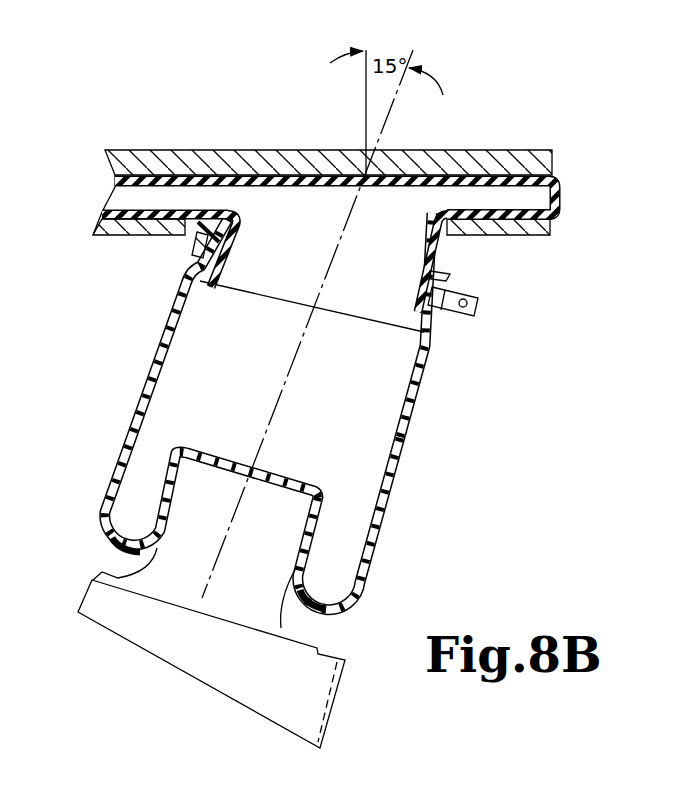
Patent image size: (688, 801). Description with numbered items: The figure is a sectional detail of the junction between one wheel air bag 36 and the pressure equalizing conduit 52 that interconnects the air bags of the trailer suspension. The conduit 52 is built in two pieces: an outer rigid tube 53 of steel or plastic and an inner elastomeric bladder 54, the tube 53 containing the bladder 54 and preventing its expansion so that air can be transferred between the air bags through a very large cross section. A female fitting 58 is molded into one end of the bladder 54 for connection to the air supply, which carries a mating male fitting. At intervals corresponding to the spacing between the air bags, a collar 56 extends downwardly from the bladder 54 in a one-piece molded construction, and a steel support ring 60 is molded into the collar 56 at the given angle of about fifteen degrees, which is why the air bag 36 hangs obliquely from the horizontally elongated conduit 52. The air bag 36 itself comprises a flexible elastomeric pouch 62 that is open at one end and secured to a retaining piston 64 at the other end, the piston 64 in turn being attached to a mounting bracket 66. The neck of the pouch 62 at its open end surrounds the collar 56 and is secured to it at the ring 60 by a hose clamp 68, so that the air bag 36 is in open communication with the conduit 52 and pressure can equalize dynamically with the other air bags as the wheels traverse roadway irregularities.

The air bag 36 is at (125, 380).
The pressure equalizing conduit 52 is at (348, 175).
The outer rigid tube 53 is at (541, 153).
The inner elastomeric bladder 54 is at (480, 172).
The collar 56 is at (430, 258).
The female fitting 58 is at (561, 202).
The steel support ring 60 is at (225, 253).
The flexible elastomeric pouch 62 is at (365, 574).
The retaining piston 64 is at (280, 628).
The mounting bracket 66 is at (323, 698).
The hose clamp 68 is at (475, 300).